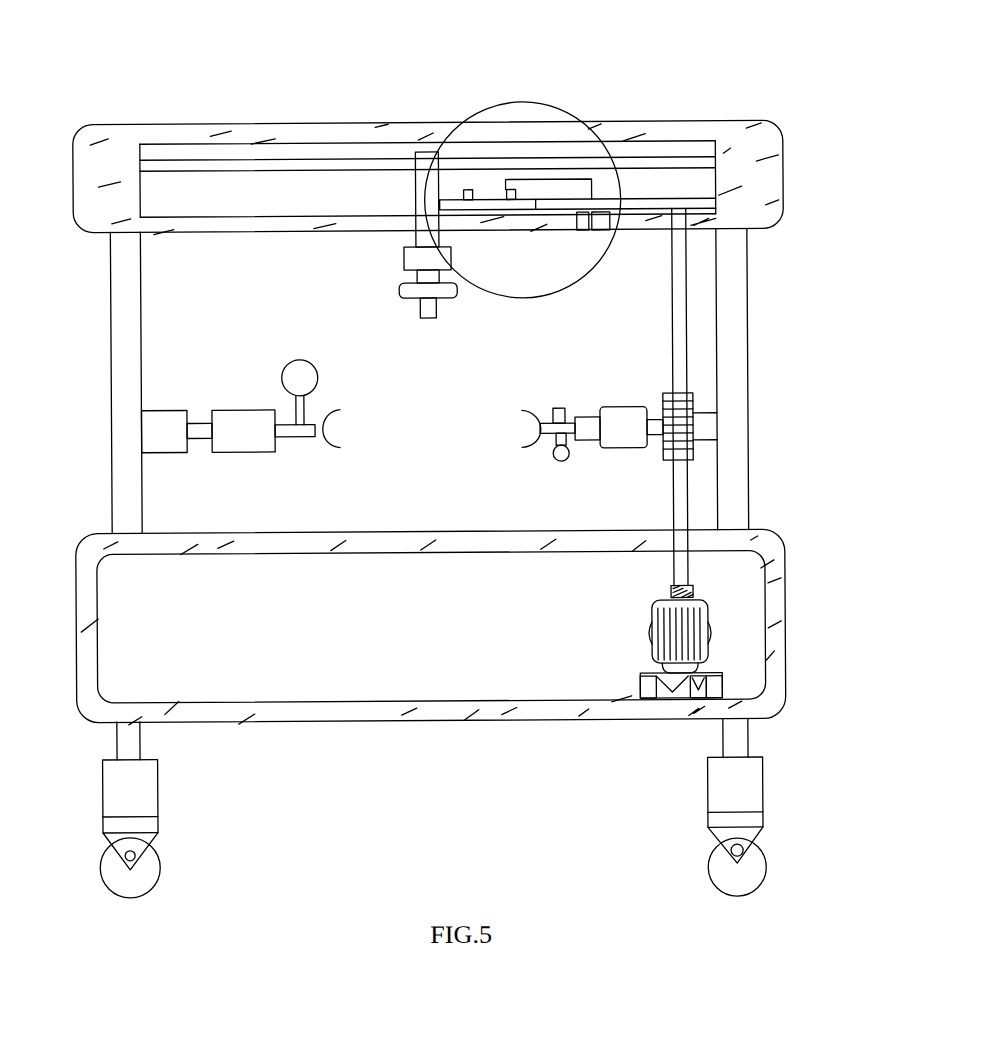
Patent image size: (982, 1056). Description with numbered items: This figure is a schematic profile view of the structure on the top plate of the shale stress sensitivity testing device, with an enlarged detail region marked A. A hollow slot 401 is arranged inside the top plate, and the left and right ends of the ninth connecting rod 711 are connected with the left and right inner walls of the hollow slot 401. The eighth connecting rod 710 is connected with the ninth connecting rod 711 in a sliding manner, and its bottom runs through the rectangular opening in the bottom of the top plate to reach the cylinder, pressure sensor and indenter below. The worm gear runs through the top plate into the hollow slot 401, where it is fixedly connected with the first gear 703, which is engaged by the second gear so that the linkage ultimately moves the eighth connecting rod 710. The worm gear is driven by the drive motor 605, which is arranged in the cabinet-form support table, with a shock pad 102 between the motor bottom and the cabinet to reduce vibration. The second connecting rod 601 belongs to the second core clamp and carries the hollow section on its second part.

The hollow slot 401 is at (187, 193).
The eighth connecting rod 710 is at (415, 190).
The ninth connecting rod 711 is at (690, 157).
The first gear 703 is at (708, 207).
The second connecting rod 601 is at (647, 422).
The drive motor 605 is at (710, 623).
The shock pad 102 is at (722, 702).
The detail area A is at (520, 102).